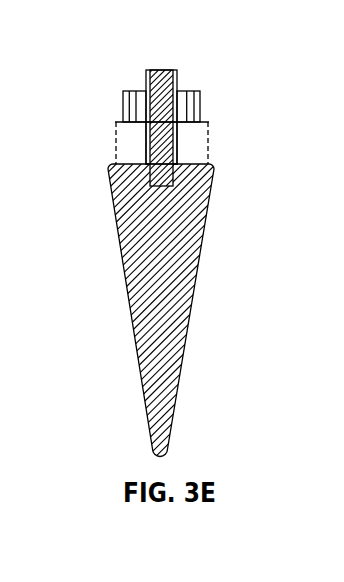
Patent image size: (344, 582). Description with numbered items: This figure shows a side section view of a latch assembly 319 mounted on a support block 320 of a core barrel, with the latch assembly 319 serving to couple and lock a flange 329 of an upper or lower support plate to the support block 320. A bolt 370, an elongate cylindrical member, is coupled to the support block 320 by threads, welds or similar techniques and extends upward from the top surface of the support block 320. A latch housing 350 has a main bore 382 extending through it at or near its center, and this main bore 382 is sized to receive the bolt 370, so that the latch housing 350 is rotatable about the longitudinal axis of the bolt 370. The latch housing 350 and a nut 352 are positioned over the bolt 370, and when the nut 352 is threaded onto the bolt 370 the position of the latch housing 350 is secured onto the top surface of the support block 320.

The latch assembly 319 is at (123, 66).
The support block 320 is at (186, 348).
The flange 329 is at (115, 143).
The latch housing 350 is at (201, 120).
The nut 352 is at (178, 75).
The bolt 370 is at (177, 157).
The main bore 382 is at (178, 101).